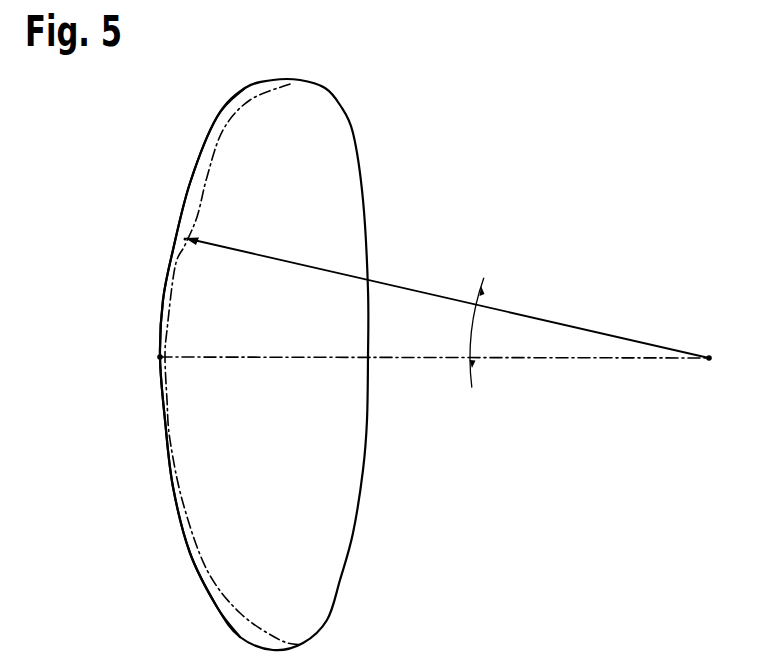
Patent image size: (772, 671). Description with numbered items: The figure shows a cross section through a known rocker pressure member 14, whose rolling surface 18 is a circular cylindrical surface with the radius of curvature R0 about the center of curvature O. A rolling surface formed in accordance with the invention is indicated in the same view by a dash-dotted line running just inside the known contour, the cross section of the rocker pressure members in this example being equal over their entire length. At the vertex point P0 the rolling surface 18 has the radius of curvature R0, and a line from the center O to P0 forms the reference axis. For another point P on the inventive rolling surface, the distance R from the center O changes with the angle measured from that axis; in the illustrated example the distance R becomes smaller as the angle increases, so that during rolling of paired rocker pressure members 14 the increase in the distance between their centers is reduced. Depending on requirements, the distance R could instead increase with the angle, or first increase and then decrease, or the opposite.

The rocker pressure member 14 is at (313, 92).
The rolling surface 18 is at (198, 165).
The distance R is at (417, 290).
The radius of curvature R0 is at (408, 363).
The point on the rolling surface P is at (185, 242).
The point on the rolling surface P0 is at (160, 357).
The center of curvature O is at (709, 356).